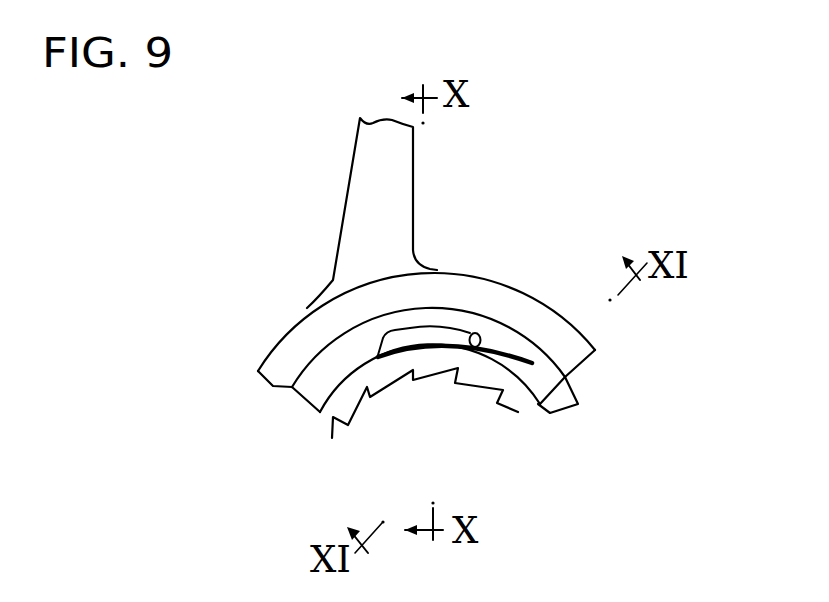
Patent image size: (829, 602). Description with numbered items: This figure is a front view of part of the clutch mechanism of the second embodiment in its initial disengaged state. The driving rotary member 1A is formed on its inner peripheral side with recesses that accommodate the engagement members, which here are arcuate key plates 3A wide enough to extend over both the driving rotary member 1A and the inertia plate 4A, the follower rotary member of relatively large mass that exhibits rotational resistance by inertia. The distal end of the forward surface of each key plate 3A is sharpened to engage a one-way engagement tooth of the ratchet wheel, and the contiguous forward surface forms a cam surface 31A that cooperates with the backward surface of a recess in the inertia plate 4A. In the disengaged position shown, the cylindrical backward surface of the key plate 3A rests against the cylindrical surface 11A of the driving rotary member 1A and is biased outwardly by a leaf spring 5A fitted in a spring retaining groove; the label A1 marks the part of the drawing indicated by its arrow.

The arm portion A1 is at (345, 224).
The driving rotary member 1A is at (315, 393).
The key plate 3A is at (460, 333).
The inertia plate 4A is at (559, 396).
The leaf spring 5A is at (530, 347).
The cylindrical surface 11A is at (480, 334).
The cam surface 31A is at (378, 355).